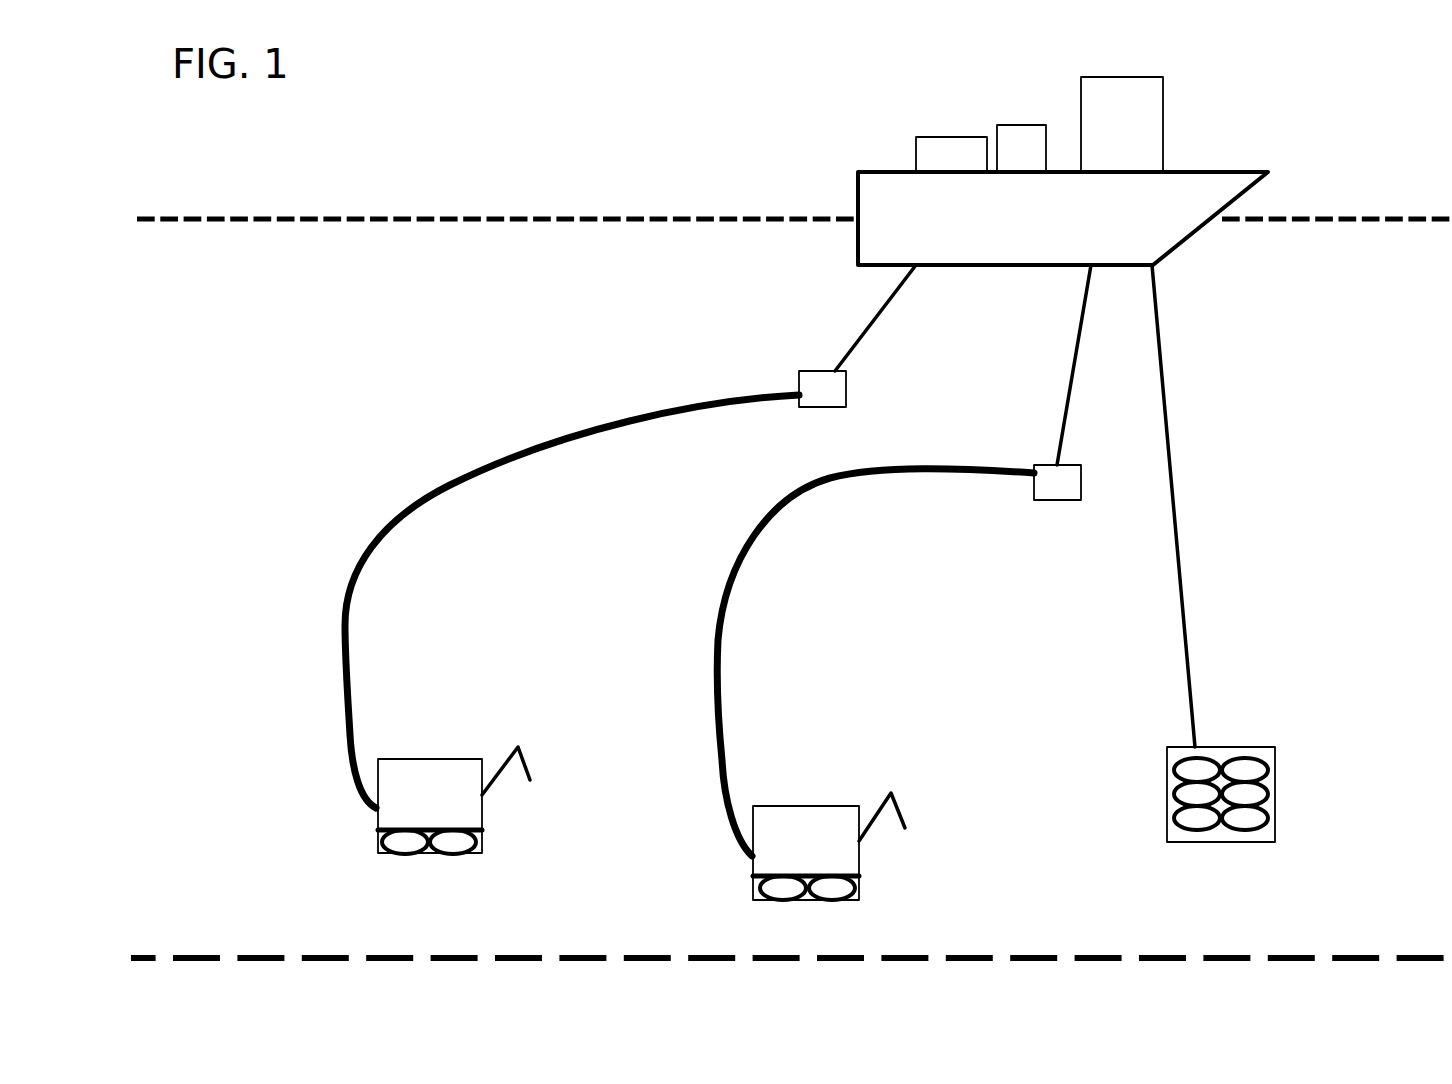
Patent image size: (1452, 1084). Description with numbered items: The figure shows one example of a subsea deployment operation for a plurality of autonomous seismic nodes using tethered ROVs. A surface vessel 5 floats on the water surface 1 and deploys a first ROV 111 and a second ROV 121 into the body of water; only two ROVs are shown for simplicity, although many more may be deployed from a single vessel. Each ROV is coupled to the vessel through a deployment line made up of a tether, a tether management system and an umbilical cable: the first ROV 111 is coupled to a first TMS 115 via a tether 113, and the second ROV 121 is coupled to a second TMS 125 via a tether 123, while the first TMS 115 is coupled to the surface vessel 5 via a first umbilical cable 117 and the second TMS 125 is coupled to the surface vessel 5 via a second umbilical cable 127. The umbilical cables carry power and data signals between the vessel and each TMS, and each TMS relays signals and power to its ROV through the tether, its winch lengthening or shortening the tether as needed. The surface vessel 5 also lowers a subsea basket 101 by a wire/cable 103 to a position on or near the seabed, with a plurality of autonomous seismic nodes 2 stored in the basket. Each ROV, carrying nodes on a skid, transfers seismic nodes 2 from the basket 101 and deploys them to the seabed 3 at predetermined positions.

The water surface 1 is at (190, 220).
The autonomous seismic nodes 2 is at (1248, 768).
The seabed 3 is at (1326, 955).
The surface vessel 5 is at (1243, 172).
The subsea basket 101 is at (1191, 790).
The wire/cable 103 is at (1165, 406).
The first ROV 111 is at (400, 810).
The tether 113 is at (398, 512).
The first TMS 115 is at (846, 380).
The first umbilical cable 117 is at (855, 335).
The second ROV 121 is at (775, 858).
The tether 123 is at (742, 580).
The second TMS 125 is at (1070, 500).
The second umbilical cable 127 is at (1068, 380).